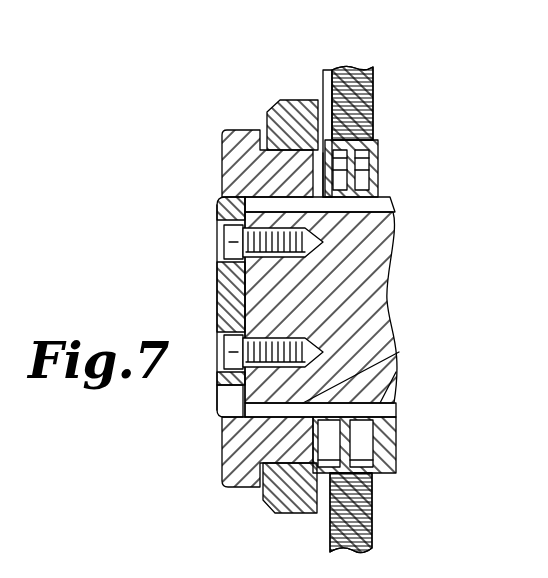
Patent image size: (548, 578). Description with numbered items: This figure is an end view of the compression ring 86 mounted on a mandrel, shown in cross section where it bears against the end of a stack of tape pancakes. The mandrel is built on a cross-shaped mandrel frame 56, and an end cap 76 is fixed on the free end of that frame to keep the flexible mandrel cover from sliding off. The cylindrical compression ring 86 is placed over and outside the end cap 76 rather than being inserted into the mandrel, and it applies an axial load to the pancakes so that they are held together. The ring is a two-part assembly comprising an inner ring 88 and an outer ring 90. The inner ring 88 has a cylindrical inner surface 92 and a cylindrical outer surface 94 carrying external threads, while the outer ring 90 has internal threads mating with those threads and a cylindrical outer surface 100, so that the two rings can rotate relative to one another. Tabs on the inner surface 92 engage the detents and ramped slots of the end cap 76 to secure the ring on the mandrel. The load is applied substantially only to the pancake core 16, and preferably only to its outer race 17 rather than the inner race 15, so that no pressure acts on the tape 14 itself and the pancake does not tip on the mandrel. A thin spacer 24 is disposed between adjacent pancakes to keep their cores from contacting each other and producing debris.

The tape 14 is at (373, 83).
The inner race 15 is at (373, 427).
The core 16 is at (378, 157).
The outer race 17 is at (370, 477).
The spacer 24 is at (322, 100).
The mandrel frame 56 is at (387, 263).
The end cap 76 is at (232, 290).
The compression ring 86 is at (243, 492).
The inner ring 88 is at (237, 448).
The outer ring 90 is at (295, 493).
The inner surface 92 is at (393, 353).
The outer surface 94 is at (241, 128).
The outer surface 100 is at (283, 100).